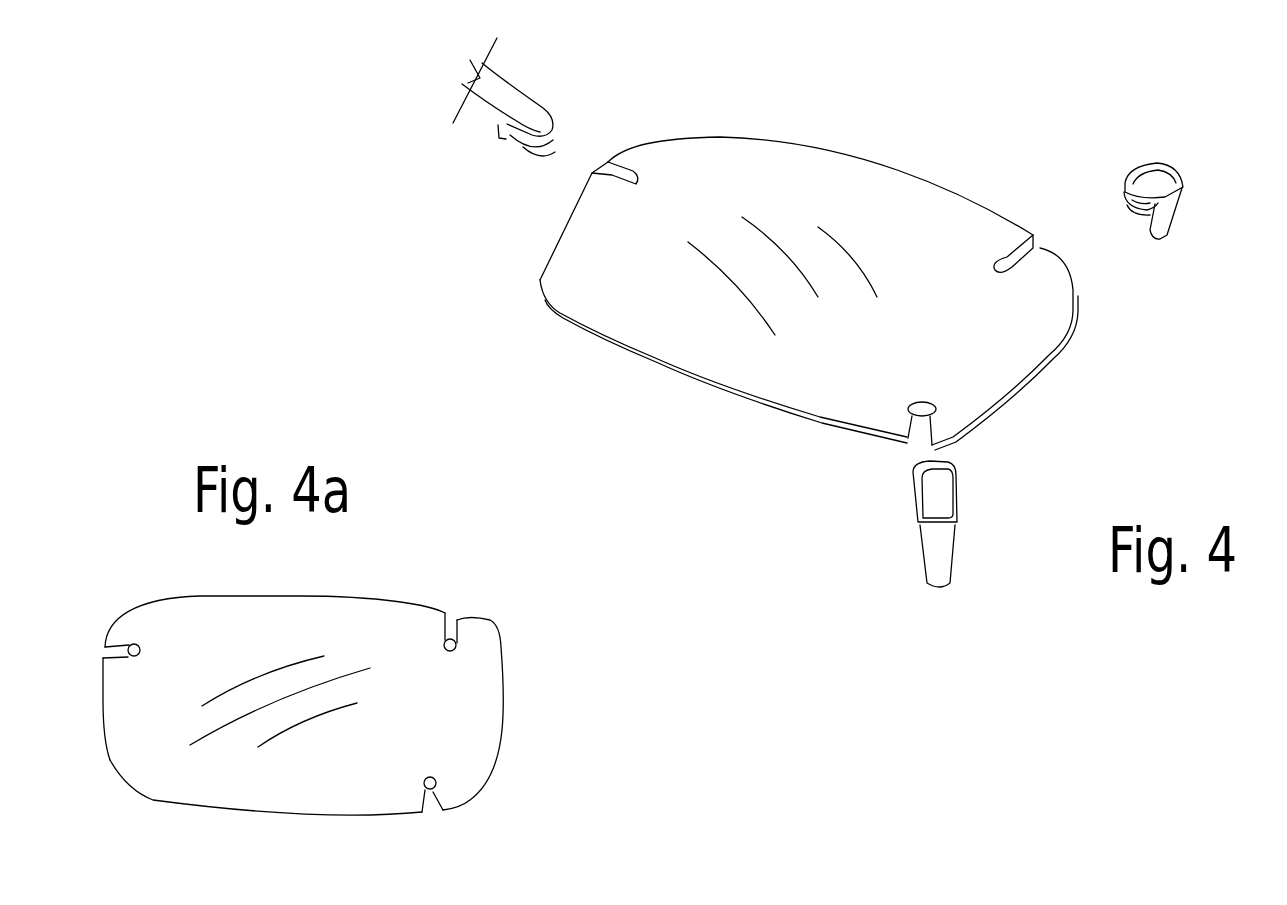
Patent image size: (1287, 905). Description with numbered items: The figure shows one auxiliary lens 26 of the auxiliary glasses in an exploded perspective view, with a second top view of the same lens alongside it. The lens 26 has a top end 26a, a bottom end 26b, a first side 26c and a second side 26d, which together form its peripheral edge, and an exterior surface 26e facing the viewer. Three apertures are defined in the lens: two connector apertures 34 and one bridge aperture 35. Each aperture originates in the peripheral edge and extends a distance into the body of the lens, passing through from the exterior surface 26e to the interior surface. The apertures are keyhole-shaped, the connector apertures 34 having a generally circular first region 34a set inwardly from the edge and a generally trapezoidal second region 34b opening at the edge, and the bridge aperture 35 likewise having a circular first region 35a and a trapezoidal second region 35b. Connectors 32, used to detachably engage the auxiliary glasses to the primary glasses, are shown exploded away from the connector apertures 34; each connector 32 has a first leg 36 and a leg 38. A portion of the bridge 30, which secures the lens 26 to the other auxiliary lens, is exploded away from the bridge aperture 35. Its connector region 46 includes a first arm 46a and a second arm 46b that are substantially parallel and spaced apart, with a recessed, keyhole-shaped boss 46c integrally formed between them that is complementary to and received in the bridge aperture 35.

In FIG. 4, the lens 26 is at (722, 348).
In FIG. 4A, the lens 26 is at (305, 702).
In FIG. 4, the top end 26a is at (900, 166).
In FIG. 4A, the top end 26a is at (312, 597).
In FIG. 4, the bottom end 26b is at (770, 406).
In FIG. 4A, the bottom end 26b is at (317, 815).
In FIG. 4, the first side 26c is at (546, 213).
In FIG. 4A, the first side 26c is at (103, 734).
In FIG. 4, the second side 26d is at (1048, 360).
In FIG. 4A, the second side 26d is at (498, 764).
In FIG. 4, the exterior surface 26e is at (998, 320).
In FIG. 4A, the exterior surface 26e is at (418, 653).
In FIG. 4, the bridge 30 is at (497, 82).
In FIG. 4, the connector 32 is at (1170, 170).
In FIG. 4, the connector aperture 34 is at (1041, 244).
In FIG. 4A, the connector aperture 34 is at (447, 608).
In FIG. 4A, the first region 34a is at (457, 651).
In FIG. 4A, the second region 34b is at (457, 628).
In FIG. 4, the bridge aperture 35 is at (602, 166).
In FIG. 4A, the bridge aperture 35 is at (103, 651).
In FIG. 4A, the first region 35a is at (139, 646).
In FIG. 4A, the second region 35b is at (116, 660).
In FIG. 4, the first leg 36 is at (1142, 182).
In FIG. 4, the clip leg 38 is at (1172, 228).
In FIG. 4, the connector region 46 is at (510, 140).
In FIG. 4, the first arm 46a is at (537, 122).
In FIG. 4, the second arm 46b is at (547, 157).
In FIG. 4, the recessed boss 46c is at (573, 126).